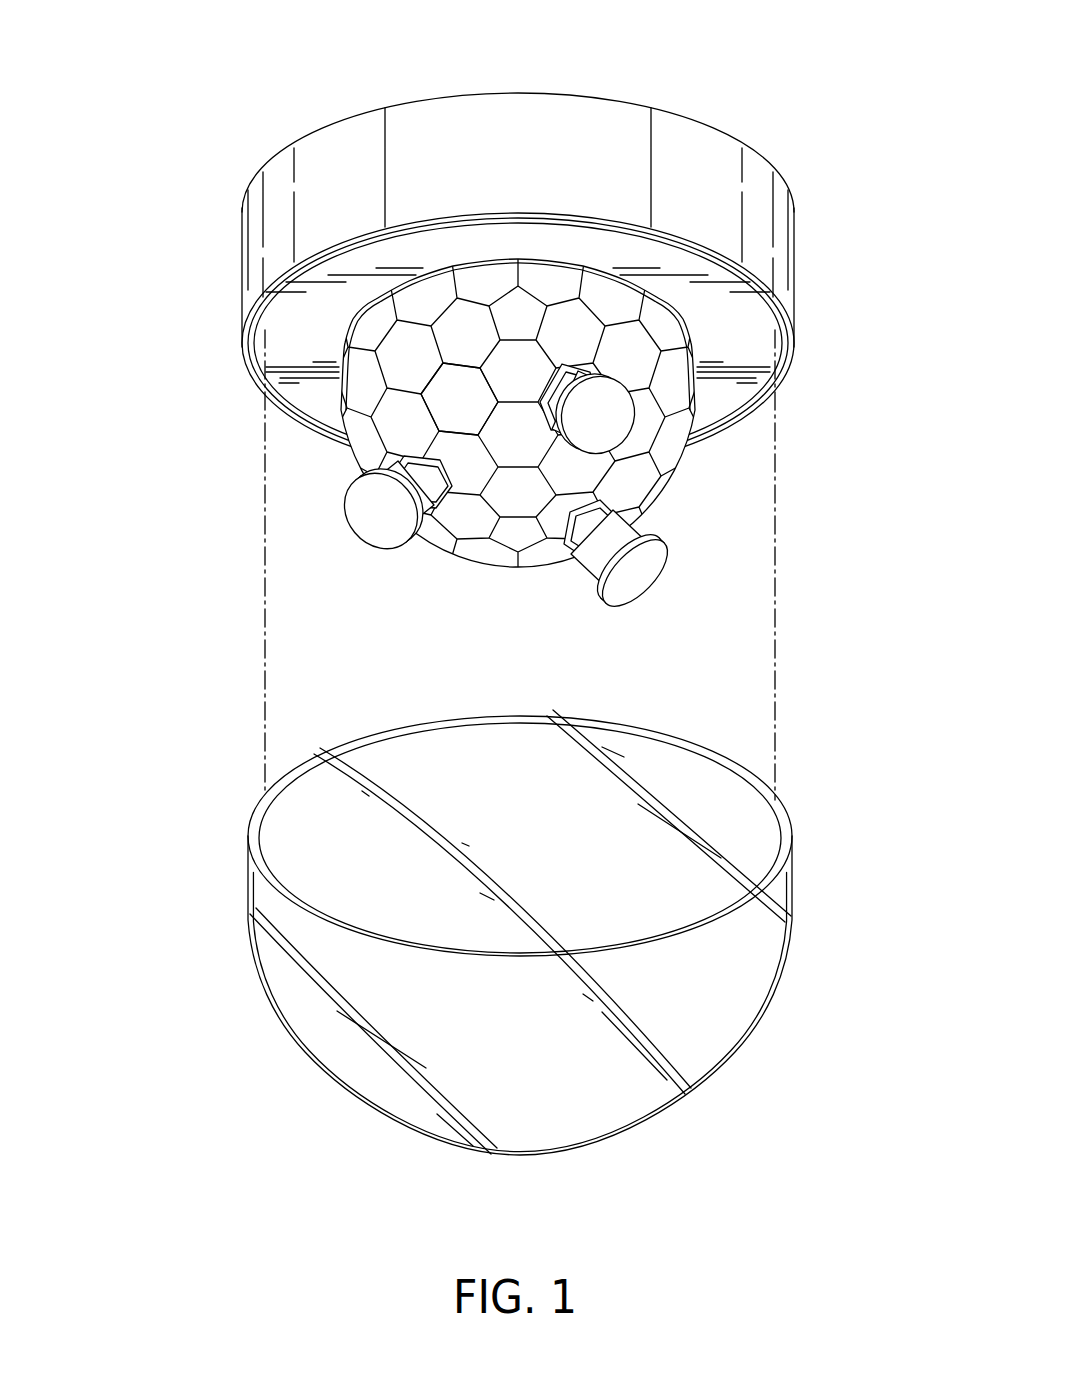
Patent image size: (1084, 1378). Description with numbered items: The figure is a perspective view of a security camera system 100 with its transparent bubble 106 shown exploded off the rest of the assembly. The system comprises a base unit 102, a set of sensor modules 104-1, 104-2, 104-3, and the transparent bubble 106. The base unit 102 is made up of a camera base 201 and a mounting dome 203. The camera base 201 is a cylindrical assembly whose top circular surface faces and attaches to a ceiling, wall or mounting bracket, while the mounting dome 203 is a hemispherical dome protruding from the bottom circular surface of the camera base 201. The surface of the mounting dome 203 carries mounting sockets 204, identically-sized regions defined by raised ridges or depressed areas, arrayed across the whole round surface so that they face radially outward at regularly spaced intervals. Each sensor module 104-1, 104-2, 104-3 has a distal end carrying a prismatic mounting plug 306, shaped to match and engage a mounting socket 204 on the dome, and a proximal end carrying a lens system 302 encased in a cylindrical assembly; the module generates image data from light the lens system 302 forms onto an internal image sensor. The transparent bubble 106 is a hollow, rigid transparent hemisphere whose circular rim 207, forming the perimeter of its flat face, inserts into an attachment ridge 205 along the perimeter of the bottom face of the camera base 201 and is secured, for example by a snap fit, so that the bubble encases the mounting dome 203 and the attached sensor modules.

The security camera system 100 is at (150, 51).
The base unit 102 is at (518, 80).
The camera base 201 is at (794, 240).
The attachment ridge 205 is at (250, 372).
The mounting dome 203 is at (467, 566).
The mounting socket 204 is at (400, 418).
The sensor module 104-1 is at (372, 553).
The sensor module 104-2 is at (624, 619).
The sensor module 104-3 is at (628, 464).
The mounting plug 306 is at (592, 545).
The lens system 302 is at (640, 580).
The circular rim 207 is at (249, 836).
The transparent bubble 106 is at (628, 1133).